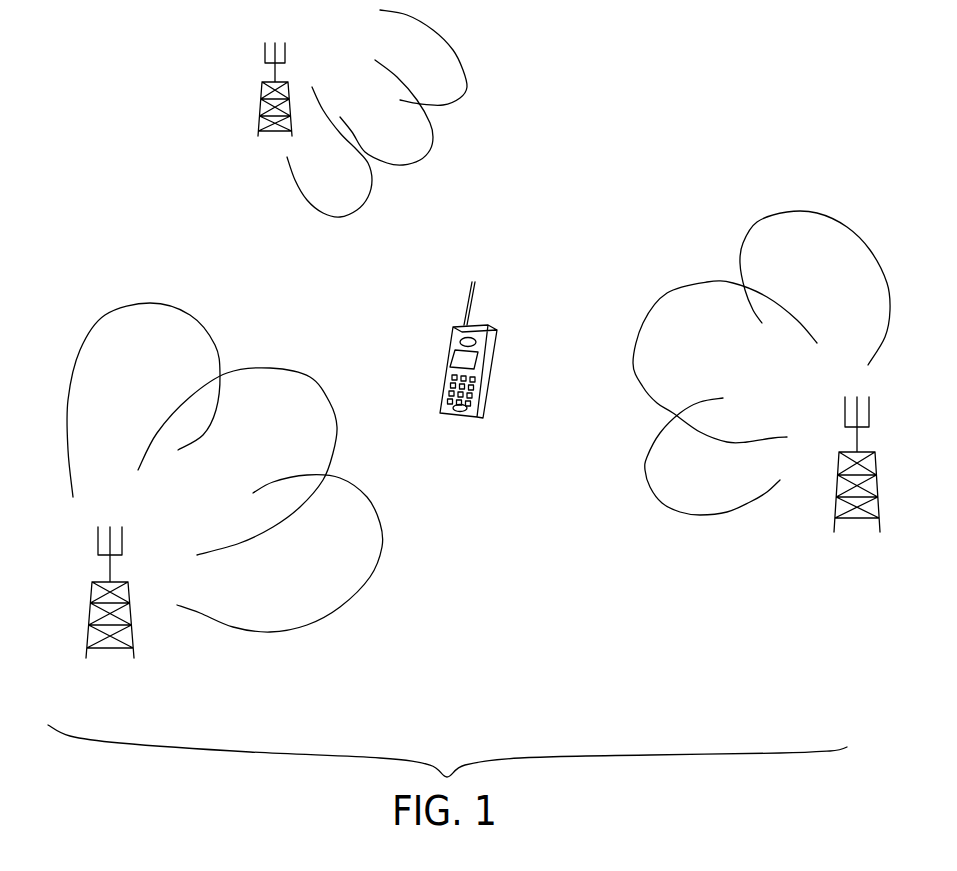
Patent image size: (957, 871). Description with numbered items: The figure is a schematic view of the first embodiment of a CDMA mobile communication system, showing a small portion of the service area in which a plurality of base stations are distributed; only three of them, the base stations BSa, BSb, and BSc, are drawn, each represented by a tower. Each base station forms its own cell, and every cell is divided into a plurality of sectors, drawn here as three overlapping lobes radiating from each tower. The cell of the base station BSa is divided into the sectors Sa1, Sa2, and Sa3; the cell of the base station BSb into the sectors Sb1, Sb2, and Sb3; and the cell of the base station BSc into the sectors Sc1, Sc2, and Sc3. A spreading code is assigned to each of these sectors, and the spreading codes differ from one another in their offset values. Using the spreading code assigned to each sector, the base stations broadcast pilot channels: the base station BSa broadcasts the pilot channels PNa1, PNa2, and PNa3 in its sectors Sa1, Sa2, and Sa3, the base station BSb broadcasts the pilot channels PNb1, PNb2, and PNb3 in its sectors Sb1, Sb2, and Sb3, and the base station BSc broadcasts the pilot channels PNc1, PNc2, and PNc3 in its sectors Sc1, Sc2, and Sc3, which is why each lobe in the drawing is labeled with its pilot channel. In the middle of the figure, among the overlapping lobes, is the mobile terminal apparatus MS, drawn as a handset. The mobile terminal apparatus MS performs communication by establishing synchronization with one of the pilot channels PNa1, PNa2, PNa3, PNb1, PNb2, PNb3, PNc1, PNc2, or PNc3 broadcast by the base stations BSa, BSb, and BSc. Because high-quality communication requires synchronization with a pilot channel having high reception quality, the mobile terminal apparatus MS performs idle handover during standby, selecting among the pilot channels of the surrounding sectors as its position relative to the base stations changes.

The base station BSa is at (105, 657).
The base station BSb is at (855, 525).
The base station BSc is at (273, 137).
The mobile terminal apparatus MS is at (465, 418).
The sector Sa1 is at (313, 553).
The sector Sa2 is at (237, 439).
The sector Sa3 is at (143, 375).
The sector Sb1 is at (812, 261).
The sector Sb2 is at (723, 343).
The sector Sb3 is at (701, 473).
The sector Sc1 is at (442, 57).
The sector Sc2 is at (416, 118).
The sector Sc3 is at (358, 160).
The pilot channel PNa1 is at (280, 553).
The pilot channel PNa2 is at (303, 348).
The pilot channel PNa3 is at (143, 400).
The pilot channel PNb1 is at (815, 288).
The pilot channel PNb2 is at (650, 270).
The pilot channel PNb3 is at (643, 525).
The pilot channel PNc1 is at (481, 46).
The pilot channel PNc2 is at (452, 157).
The pilot channel PNc3 is at (390, 215).